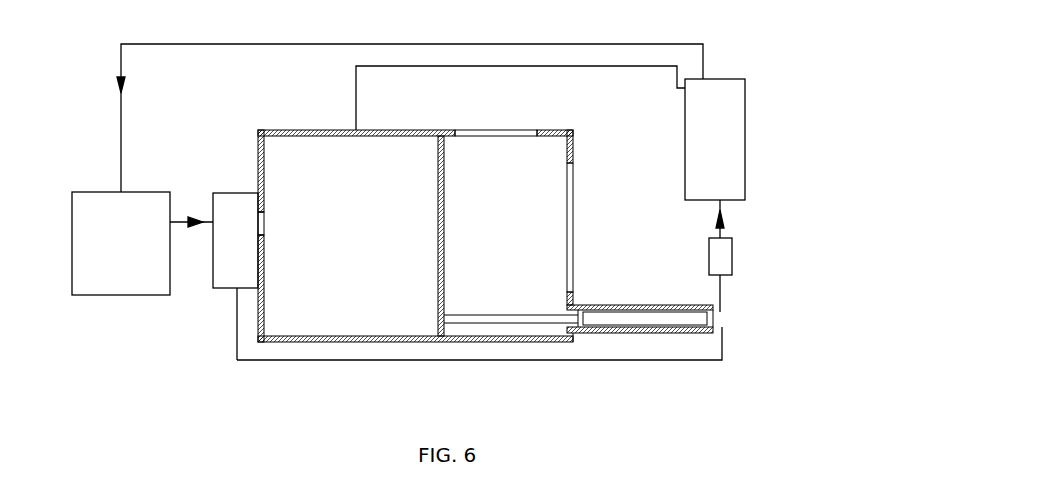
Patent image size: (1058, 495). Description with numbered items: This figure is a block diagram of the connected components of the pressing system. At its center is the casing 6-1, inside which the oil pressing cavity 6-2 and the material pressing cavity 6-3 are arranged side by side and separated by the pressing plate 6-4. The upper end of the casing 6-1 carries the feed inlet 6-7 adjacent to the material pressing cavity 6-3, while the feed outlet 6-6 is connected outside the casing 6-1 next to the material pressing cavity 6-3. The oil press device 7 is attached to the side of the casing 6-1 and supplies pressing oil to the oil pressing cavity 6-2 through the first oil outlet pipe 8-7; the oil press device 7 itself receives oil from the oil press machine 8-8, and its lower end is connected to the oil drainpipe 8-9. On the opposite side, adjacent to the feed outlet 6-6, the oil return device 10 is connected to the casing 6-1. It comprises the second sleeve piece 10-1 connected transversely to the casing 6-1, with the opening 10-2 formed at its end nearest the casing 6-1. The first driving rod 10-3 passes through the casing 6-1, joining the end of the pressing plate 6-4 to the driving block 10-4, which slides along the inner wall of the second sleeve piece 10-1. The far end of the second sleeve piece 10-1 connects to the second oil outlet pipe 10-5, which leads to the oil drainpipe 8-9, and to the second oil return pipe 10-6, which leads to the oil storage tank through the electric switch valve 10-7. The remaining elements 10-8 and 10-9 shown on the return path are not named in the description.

The casing 6-1 is at (259, 160).
The oil pressing cavity 6-2 is at (343, 152).
The material pressing cavity 6-3 is at (538, 162).
The pressing plate 6-4 is at (440, 165).
The feed outlet 6-6 is at (570, 185).
The feed inlet 6-7 is at (495, 130).
The oil press device 7 is at (225, 262).
The first oil outlet pipe 8-7 is at (258, 215).
The oil press machine 8-8 is at (118, 296).
The oil drainpipe 8-9 is at (237, 289).
The oil return device 10 is at (680, 395).
The second sleeve piece 10-1 is at (640, 334).
The opening 10-2 is at (573, 337).
The first driving rod 10-3 is at (487, 320).
The driving block 10-4 is at (585, 318).
The second oil outlet pipe 10-5 is at (722, 357).
The second oil return pipe 10-6 is at (722, 310).
The electric switch valve 10-7 is at (733, 258).
The return pipe 10-8 is at (667, 66).
The tank 10-9 is at (730, 180).